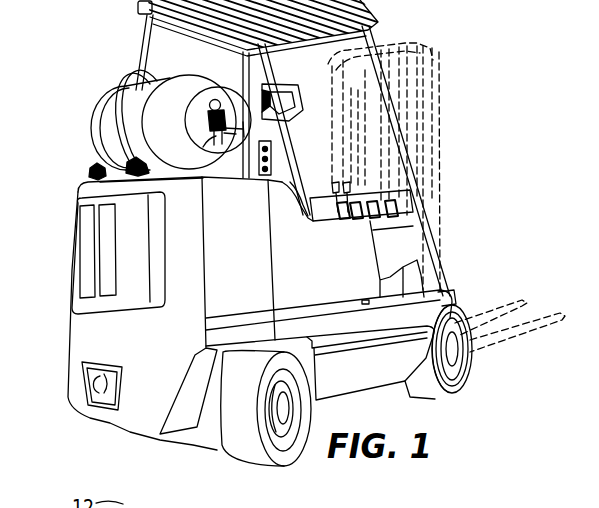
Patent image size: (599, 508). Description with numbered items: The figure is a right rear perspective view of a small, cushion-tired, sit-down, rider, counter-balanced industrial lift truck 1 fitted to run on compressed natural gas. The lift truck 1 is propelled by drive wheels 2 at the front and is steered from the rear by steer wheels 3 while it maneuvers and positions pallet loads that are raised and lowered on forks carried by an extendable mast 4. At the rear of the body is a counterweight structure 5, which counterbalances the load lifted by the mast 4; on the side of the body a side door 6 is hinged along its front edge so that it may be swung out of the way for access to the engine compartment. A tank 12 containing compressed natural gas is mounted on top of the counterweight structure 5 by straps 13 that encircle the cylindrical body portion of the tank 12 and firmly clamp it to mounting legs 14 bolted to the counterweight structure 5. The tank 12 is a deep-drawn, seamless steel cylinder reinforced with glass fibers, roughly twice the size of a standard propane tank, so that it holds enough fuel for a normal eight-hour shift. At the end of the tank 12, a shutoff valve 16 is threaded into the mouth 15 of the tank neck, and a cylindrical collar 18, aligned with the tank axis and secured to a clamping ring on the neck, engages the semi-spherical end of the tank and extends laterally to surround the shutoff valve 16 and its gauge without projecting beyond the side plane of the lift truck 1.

The lift truck 1 is at (58, 231).
The drive wheels 2 is at (470, 388).
The steer wheels 3 is at (276, 463).
The extendable mast 4 is at (445, 194).
The counterweight structure 5 is at (105, 338).
The side door 6 is at (330, 280).
The tank 12 is at (131, 96).
The straps 13 is at (135, 126).
The mounting legs 14 is at (92, 170).
The mouth 15 is at (227, 93).
The shutoff valve 16 is at (203, 147).
The cylindrical collar 18 is at (207, 117).